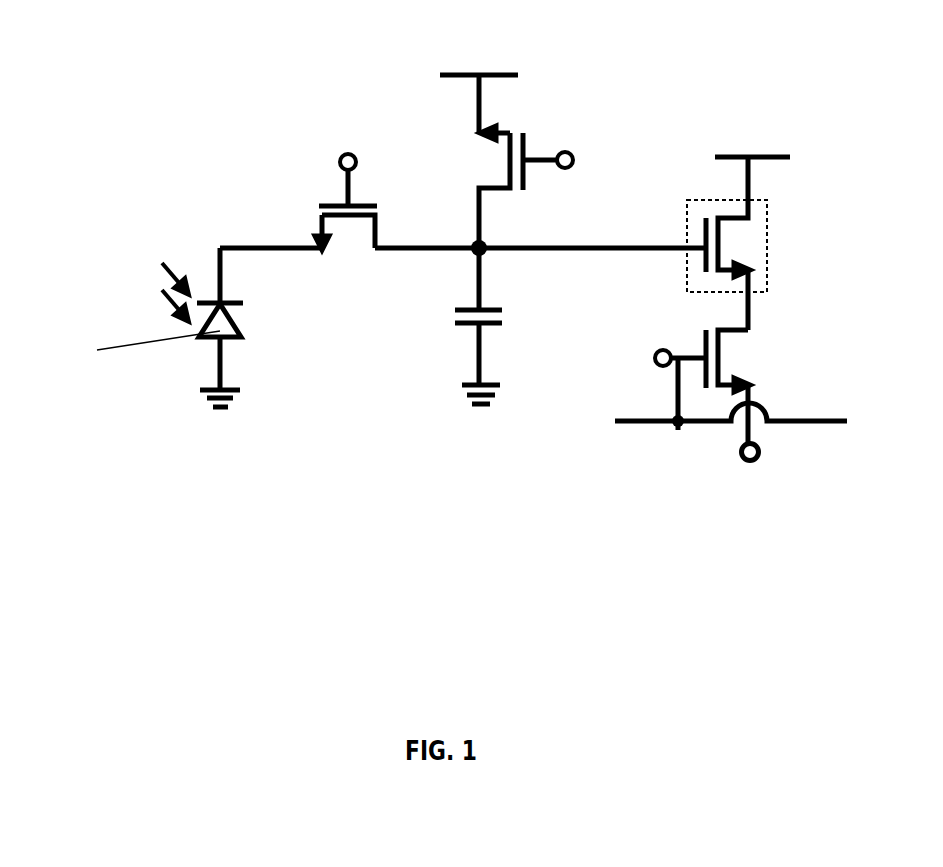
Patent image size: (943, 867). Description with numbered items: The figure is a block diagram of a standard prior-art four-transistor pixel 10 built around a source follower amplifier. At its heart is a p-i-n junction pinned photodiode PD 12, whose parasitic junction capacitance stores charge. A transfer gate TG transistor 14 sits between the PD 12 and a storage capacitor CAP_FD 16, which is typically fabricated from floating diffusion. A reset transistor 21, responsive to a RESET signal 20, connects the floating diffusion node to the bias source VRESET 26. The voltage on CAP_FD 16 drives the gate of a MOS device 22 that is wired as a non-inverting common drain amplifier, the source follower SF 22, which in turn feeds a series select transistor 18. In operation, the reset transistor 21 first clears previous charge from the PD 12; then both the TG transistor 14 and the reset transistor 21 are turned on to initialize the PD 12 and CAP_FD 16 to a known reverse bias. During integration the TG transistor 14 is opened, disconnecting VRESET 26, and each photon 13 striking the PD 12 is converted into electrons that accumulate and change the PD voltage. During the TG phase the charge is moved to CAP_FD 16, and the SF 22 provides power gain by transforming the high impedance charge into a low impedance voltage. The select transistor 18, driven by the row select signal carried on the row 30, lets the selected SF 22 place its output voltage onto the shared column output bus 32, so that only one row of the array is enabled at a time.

The 4T pixel 10 is at (124, 395).
The p-i-n junction PD 12 is at (256, 345).
The photon 13 is at (124, 280).
The transfer gate (TG) transistor 14 is at (314, 206).
The storage capacitor 16 is at (452, 327).
The select transistor 18 is at (753, 357).
The RESET signal 20 is at (618, 142).
The reset transistor 21 is at (530, 133).
The source follower (SF) transistor 22 is at (773, 296).
The VRESET 26 is at (530, 47).
The row 30 is at (560, 423).
The column 32 is at (740, 468).